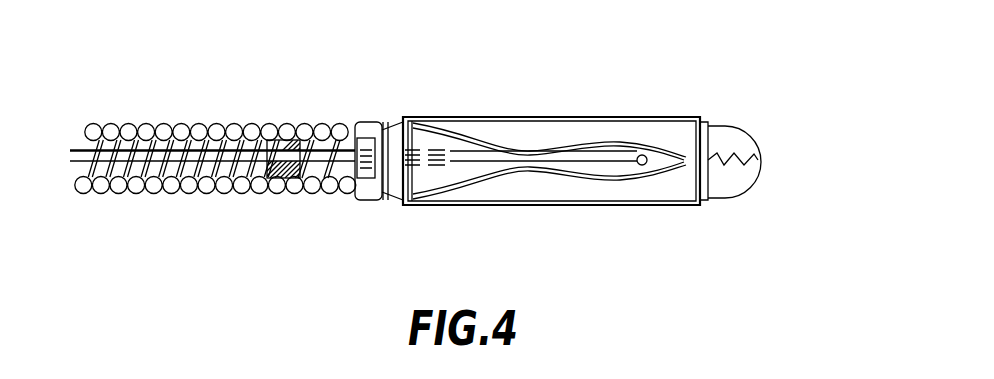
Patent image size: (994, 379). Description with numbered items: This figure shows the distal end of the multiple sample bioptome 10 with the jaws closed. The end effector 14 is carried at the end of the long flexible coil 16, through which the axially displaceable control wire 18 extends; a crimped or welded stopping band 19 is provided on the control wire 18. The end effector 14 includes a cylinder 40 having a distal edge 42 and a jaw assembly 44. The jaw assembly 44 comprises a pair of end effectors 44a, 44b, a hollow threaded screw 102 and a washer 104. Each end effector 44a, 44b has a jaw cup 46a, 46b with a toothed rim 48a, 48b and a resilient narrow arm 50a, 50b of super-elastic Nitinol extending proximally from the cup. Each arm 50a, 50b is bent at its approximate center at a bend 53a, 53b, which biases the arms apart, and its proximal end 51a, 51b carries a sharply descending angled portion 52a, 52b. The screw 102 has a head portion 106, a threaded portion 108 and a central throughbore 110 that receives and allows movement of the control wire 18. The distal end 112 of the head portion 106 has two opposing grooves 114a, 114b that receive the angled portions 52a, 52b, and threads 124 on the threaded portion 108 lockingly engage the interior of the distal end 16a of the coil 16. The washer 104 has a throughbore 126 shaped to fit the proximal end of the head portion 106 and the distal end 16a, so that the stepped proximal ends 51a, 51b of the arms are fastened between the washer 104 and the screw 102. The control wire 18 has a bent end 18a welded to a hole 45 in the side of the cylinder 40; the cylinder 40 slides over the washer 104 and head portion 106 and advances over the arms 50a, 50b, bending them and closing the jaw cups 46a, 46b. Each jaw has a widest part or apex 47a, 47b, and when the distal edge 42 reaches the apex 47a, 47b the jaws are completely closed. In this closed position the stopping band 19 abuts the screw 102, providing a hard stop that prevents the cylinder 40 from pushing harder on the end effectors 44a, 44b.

The multiple sample bioptome 10 is at (271, 266).
The end effector 14 is at (652, 79).
The coil 16 is at (167, 128).
The distal end of the coil 16a is at (335, 124).
The control wire 18 is at (118, 156).
The bent end of the control wire 18a is at (643, 166).
The stopping band 19 is at (257, 190).
The cylinder 40 is at (500, 117).
The distal edge of the cylinder 42 is at (705, 117).
The jaw assembly 44 is at (789, 140).
The end effector 44a is at (598, 117).
The end effector 44b is at (583, 189).
The hole 45 is at (651, 117).
The jaw cup 46a is at (743, 142).
The jaw cup 46b is at (727, 188).
The apex 47a is at (720, 118).
The apex 47b is at (708, 203).
The rim 48a is at (754, 157).
The rim 48b is at (730, 188).
The arm 50a is at (452, 125).
The arm 50b is at (486, 186).
The proximal end of the arm 51a is at (383, 122).
The proximal end of the arm 51b is at (392, 207).
The angled portion 52a is at (361, 122).
The angled portion 52b is at (365, 202).
The bend 53a is at (533, 118).
The bend 53b is at (535, 188).
The threaded screw 102 is at (307, 188).
The washer 104 is at (356, 203).
The head portion 106 is at (467, 128).
The threaded portion 108 is at (302, 123).
The throughbore 110 is at (387, 208).
The distal end of the head portion 112 is at (450, 180).
The groove 114a is at (397, 123).
The groove 114b is at (390, 207).
The threads 124 is at (289, 187).
The throughbore 126 is at (356, 197).